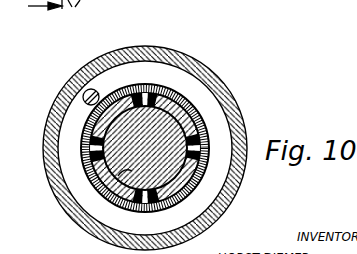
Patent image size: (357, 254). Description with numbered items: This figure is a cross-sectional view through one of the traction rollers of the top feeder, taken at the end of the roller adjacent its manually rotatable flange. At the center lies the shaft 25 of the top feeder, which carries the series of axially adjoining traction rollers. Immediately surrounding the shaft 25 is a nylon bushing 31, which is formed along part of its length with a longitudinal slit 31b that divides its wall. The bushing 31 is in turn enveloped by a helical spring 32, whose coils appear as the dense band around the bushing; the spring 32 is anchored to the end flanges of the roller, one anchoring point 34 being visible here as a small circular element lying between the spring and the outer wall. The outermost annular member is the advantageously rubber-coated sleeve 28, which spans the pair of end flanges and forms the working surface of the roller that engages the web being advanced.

The shaft 25 is at (91, 191).
The sleeve 28 is at (117, 56).
The nylon bushing 31 is at (190, 112).
The longitudinal slit 31b is at (144, 96).
The helical spring 32 is at (169, 87).
The anchoring point 34 is at (87, 90).